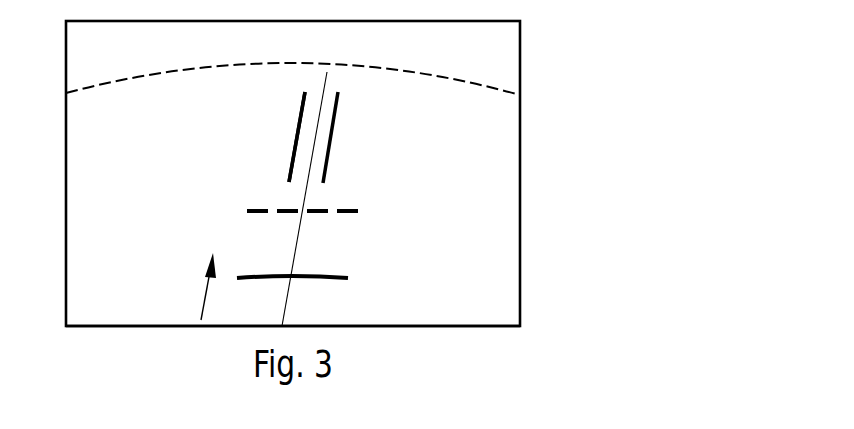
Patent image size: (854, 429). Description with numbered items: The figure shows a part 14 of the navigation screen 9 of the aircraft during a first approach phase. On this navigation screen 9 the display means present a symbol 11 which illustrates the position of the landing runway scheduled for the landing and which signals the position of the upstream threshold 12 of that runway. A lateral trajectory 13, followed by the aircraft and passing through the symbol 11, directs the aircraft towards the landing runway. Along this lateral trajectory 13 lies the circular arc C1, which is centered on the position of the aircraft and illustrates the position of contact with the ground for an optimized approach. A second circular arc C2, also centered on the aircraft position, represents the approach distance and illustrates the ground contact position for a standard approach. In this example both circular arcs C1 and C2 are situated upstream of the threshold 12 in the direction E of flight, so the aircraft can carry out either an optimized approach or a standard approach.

The navigation screen 9 is at (122, 347).
The part of the navigation screen 14 is at (410, 326).
The symbol 11 is at (333, 133).
The upstream threshold 12 is at (268, 183).
The lateral trajectory 13 is at (295, 243).
The circular arc C2 is at (350, 210).
The circular arc C1 is at (322, 278).
The direction of flight E is at (200, 303).